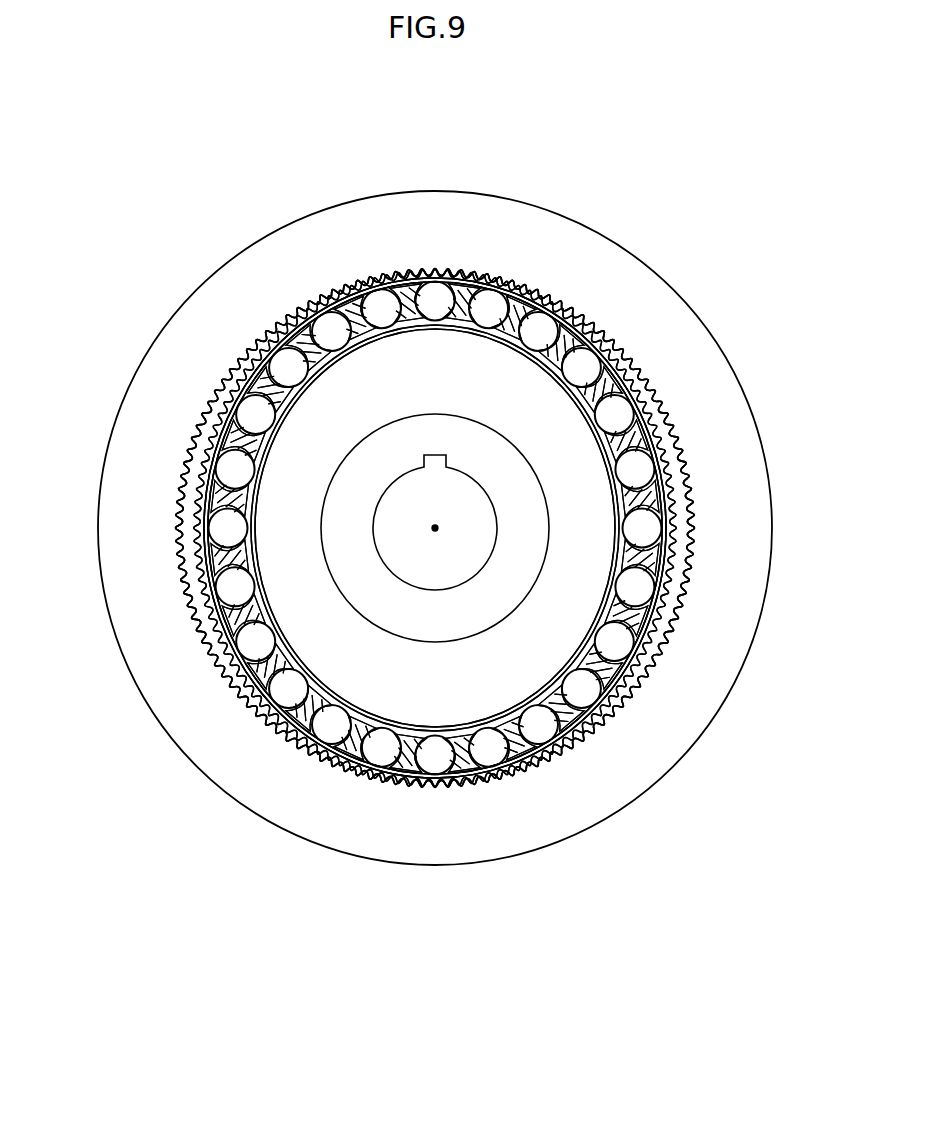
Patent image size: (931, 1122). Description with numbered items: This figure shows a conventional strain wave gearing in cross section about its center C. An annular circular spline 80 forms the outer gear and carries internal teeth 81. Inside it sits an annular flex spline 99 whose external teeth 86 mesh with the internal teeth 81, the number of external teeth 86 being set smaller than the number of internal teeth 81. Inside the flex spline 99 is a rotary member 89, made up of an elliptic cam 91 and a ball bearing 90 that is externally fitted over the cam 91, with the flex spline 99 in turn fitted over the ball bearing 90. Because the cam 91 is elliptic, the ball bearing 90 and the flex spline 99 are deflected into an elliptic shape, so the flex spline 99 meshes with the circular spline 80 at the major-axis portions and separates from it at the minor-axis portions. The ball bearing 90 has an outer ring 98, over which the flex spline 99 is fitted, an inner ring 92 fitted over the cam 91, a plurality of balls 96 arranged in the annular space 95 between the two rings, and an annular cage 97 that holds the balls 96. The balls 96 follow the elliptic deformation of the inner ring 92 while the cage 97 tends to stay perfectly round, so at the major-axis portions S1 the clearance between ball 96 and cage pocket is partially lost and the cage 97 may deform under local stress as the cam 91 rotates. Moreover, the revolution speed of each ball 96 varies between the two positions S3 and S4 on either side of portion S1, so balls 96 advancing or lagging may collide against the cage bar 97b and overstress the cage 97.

The circular spline 80 is at (585, 245).
The internal teeth 81 is at (625, 367).
The external teeth 86 is at (685, 580).
The rotary member 89 is at (85, 705).
The ball bearing 90 is at (322, 752).
The cam 91 is at (325, 675).
The inner ring 92 is at (620, 668).
The annular space 95 is at (392, 763).
The balls 96 is at (220, 533).
The cage 97 is at (252, 392).
The cage bar 97b is at (643, 492).
The outer ring 98 is at (327, 762).
The flex spline 99 is at (672, 433).
The center axis C is at (435, 528).
The portions corresponding to the major axis S1 is at (445, 262).
The position S3 is at (367, 275).
The position S4 is at (500, 278).